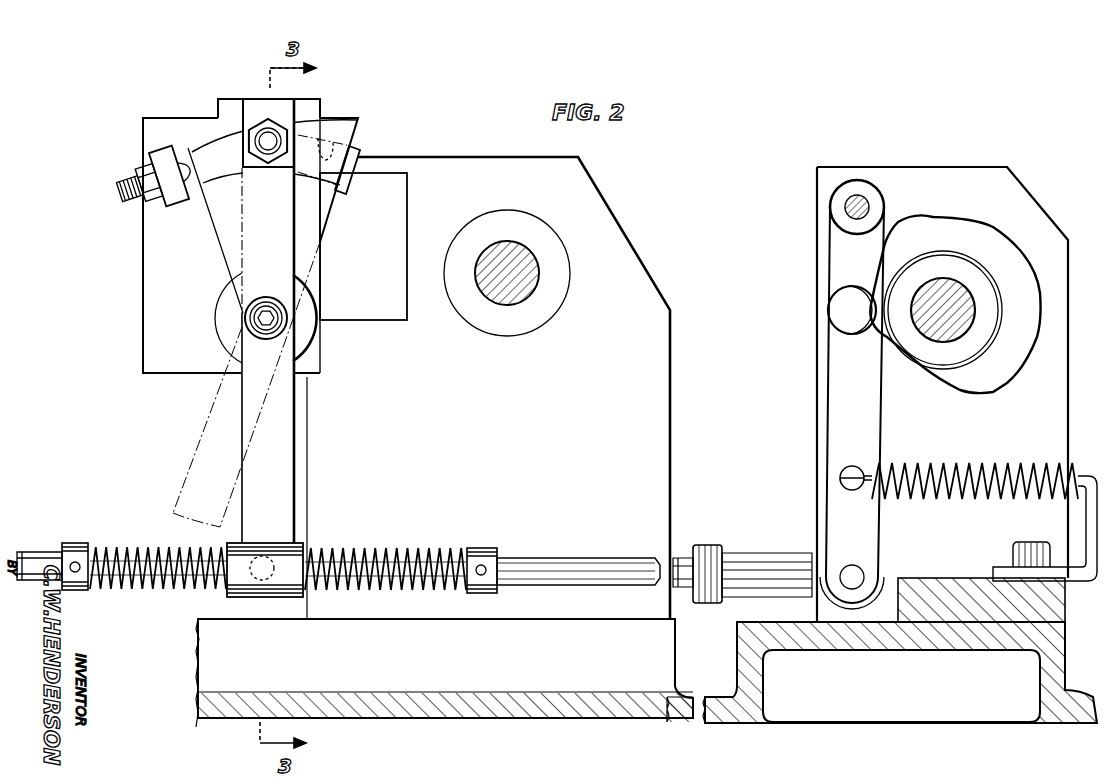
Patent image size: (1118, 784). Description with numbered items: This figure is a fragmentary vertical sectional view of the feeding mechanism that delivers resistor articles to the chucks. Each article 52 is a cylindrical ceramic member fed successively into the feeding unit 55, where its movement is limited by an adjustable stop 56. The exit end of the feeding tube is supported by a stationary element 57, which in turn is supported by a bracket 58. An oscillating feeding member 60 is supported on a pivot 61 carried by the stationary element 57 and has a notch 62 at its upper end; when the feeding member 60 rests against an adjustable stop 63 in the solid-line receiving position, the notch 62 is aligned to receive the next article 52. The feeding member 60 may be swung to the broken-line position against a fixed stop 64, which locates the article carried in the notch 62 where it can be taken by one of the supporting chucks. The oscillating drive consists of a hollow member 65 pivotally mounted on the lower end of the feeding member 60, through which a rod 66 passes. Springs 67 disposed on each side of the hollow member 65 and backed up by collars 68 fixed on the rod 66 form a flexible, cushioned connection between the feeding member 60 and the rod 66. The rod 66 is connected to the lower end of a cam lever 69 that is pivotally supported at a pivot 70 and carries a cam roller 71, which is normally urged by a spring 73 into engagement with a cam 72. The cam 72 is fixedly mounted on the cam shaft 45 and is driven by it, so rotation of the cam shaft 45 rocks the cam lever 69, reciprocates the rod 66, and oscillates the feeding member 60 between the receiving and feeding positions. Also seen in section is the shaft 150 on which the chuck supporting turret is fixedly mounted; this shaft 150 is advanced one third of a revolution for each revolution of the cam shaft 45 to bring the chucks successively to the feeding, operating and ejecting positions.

The cam shaft 45 is at (963, 309).
The article 52 is at (325, 138).
The feeding unit 55 is at (268, 347).
The adjustable stop 56 is at (268, 136).
The stationary element 57 is at (178, 372).
The bracket 58 is at (662, 326).
The oscillating feeding member 60 is at (242, 238).
The pivot 61 is at (312, 345).
The notch 62 is at (338, 136).
The adjustable stop 63 is at (178, 150).
The fixed stop 64 is at (353, 166).
The hollow member 65 is at (285, 576).
The rod 66 is at (596, 560).
The springs 67 is at (125, 546).
The collars 68 is at (82, 544).
The cam lever 69 is at (838, 394).
The pivot 70 is at (842, 212).
The cam roller 71 is at (878, 284).
The cam 72 is at (1030, 326).
The spring 73 is at (1028, 462).
The shaft 150 is at (530, 268).